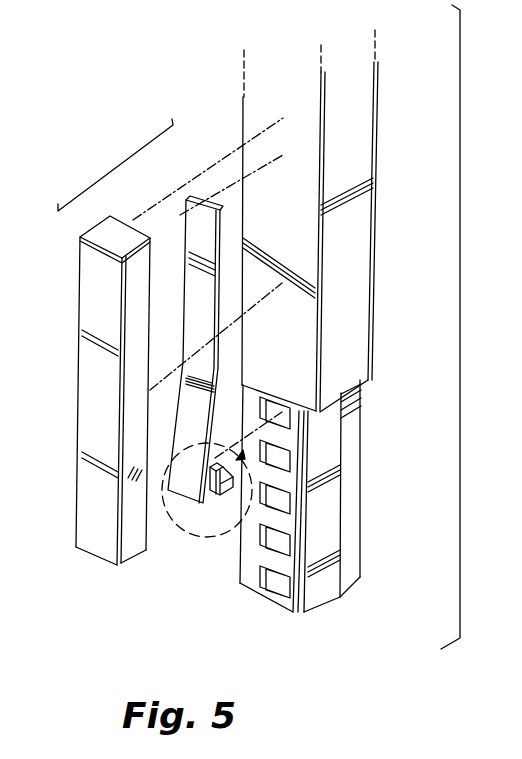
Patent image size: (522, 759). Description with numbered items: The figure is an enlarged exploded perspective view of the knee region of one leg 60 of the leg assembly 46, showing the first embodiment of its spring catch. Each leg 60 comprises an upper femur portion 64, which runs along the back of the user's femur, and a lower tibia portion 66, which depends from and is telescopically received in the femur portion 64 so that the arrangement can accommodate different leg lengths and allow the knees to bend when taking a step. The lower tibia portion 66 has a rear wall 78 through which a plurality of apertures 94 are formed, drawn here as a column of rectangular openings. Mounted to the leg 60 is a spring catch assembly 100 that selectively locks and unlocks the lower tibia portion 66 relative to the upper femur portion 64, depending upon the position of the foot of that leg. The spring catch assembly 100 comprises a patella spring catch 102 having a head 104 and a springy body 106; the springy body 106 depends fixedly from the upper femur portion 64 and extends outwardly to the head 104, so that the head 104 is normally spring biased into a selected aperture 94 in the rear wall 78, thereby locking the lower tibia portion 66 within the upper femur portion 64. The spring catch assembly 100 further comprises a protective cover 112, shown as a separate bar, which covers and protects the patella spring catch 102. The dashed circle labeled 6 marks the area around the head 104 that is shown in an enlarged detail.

The leg assembly 46 is at (395, 246).
The leg 60 is at (239, 118).
The upper femur portion 64 is at (245, 98).
The lower tibia portion 66 is at (314, 593).
The rear wall 78 is at (275, 560).
The apertures 94 is at (278, 416).
The spring catch assembly 100 is at (110, 152).
The patella spring catch 102 is at (203, 198).
The head 104 is at (222, 497).
The springy body 106 is at (203, 275).
The protective cover 112 is at (57, 511).
The detail view indicator (FIG. 6) 6 is at (190, 535).